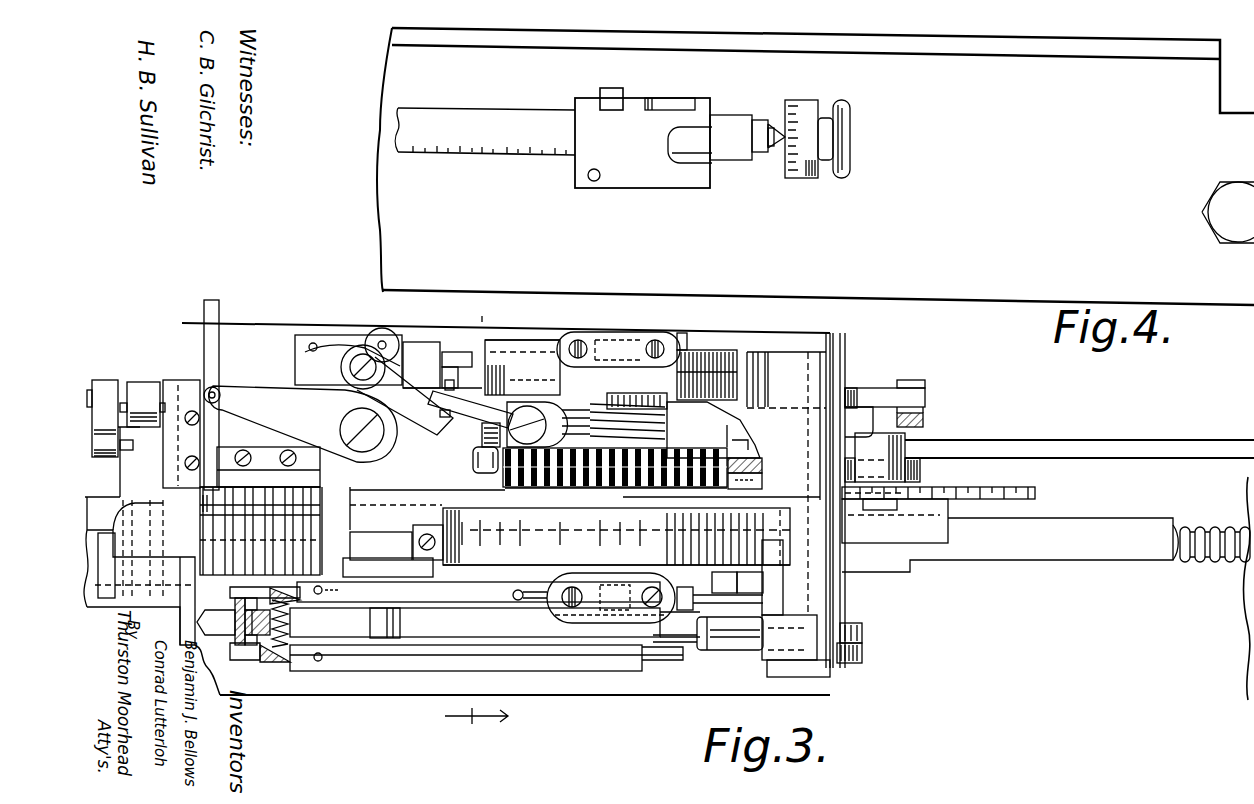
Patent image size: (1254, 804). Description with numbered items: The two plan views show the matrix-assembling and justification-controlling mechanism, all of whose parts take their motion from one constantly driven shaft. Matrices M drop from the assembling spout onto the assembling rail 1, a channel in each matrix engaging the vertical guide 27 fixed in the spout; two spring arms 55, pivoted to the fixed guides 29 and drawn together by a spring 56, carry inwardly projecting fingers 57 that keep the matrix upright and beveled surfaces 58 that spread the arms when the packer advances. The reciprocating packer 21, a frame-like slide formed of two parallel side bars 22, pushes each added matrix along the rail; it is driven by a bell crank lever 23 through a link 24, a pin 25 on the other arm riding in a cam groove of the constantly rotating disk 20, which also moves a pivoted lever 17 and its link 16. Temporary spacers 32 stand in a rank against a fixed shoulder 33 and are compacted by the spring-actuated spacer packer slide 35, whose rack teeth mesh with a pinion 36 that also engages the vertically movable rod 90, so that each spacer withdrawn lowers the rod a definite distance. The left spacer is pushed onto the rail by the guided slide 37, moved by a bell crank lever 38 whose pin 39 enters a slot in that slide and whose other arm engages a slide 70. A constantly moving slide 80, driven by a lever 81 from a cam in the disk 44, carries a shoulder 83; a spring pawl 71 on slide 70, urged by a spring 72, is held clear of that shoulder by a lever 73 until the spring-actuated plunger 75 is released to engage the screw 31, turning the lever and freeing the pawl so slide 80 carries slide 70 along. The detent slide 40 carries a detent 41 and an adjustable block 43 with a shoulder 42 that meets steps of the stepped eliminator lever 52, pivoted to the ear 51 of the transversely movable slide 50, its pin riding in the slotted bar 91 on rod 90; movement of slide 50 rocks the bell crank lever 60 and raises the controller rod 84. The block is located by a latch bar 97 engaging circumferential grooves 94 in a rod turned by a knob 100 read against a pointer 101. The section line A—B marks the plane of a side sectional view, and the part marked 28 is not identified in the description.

In FIG. 3, the assembling rail 1 is at (170, 605).
In FIG. 3, the link 16 is at (545, 605).
In FIG. 3, the pivoted lever 17 is at (720, 591).
In FIG. 3, the constantly rotating disk 20 is at (616, 551).
In FIG. 3, the reciprocating packer 21 is at (440, 612).
In FIG. 3, the side bars 22 is at (518, 610).
In FIG. 3, the bell crank lever 23 is at (875, 653).
In FIG. 3, the link 24 is at (735, 650).
In FIG. 3, the pin 25 is at (615, 528).
In FIG. 3, the vertical guide 27 is at (216, 622).
In FIG. 3, the block 28 is at (396, 543).
In FIG. 3, the fixed guides 29 is at (550, 680).
In FIG. 3, the screw 31 is at (660, 440).
In FIG. 3, the temporary spacers 32 is at (228, 528).
In FIG. 3, the fixed shoulder 33 is at (249, 517).
In FIG. 3, the spacer packer slide 35 is at (654, 521).
In FIG. 3, the pinion 36 is at (920, 470).
In FIG. 3, the guided slide 37 is at (204, 350).
In FIG. 3, the bell crank lever 38 is at (303, 424).
In FIG. 3, the pin 39 is at (218, 390).
In FIG. 4, the guided detent slide 40 is at (485, 131).
In FIG. 3, the guided detent slide 40 is at (1007, 545).
In FIG. 3, the detent 41 is at (139, 571).
In FIG. 4, the shoulder 42 is at (612, 88).
In FIG. 4, the block 43 is at (663, 143).
In FIG. 3, the disk 44 is at (660, 400).
In FIG. 3, the transversely movable slide 50 is at (859, 422).
In FIG. 3, the upwardly extended ear 51 is at (875, 457).
In FIG. 3, the stepped eliminator lever 52 is at (1005, 493).
In FIG. 3, the spring arms 55 is at (243, 668).
In FIG. 3, the spring 56 is at (293, 623).
In FIG. 3, the inwardly projecting fingers 57 is at (237, 647).
In FIG. 3, the beveled surface 58 is at (292, 676).
In FIG. 3, the bell crank lever 60 is at (890, 380).
In FIG. 3, the slide 70 is at (481, 367).
In FIG. 3, the spring pawl 71 is at (397, 381).
In FIG. 3, the spring 72 is at (348, 360).
In FIG. 3, the lever 73 is at (498, 432).
In FIG. 3, the spring-actuated plunger 75 is at (616, 350).
In FIG. 3, the slide 80 is at (510, 350).
In FIG. 3, the lever 81 is at (700, 350).
In FIG. 3, the shoulder 83 is at (456, 352).
In FIG. 3, the controller rod 84 is at (925, 418).
In FIG. 3, the vertically movable rod 90 is at (763, 460).
In FIG. 3, the slotted bar 91 is at (763, 478).
In FIG. 3, the circumferential grooves 94 is at (1220, 562).
In FIG. 4, the latch bar 97 is at (600, 175).
In FIG. 4, the knob 100 is at (817, 151).
In FIG. 4, the pointer 101 is at (774, 126).
In FIG. 3, the section line A—B A is at (482, 307).
In FIG. 3, the section line A— B is at (476, 731).
In FIG. 3, the matrices M is at (238, 645).